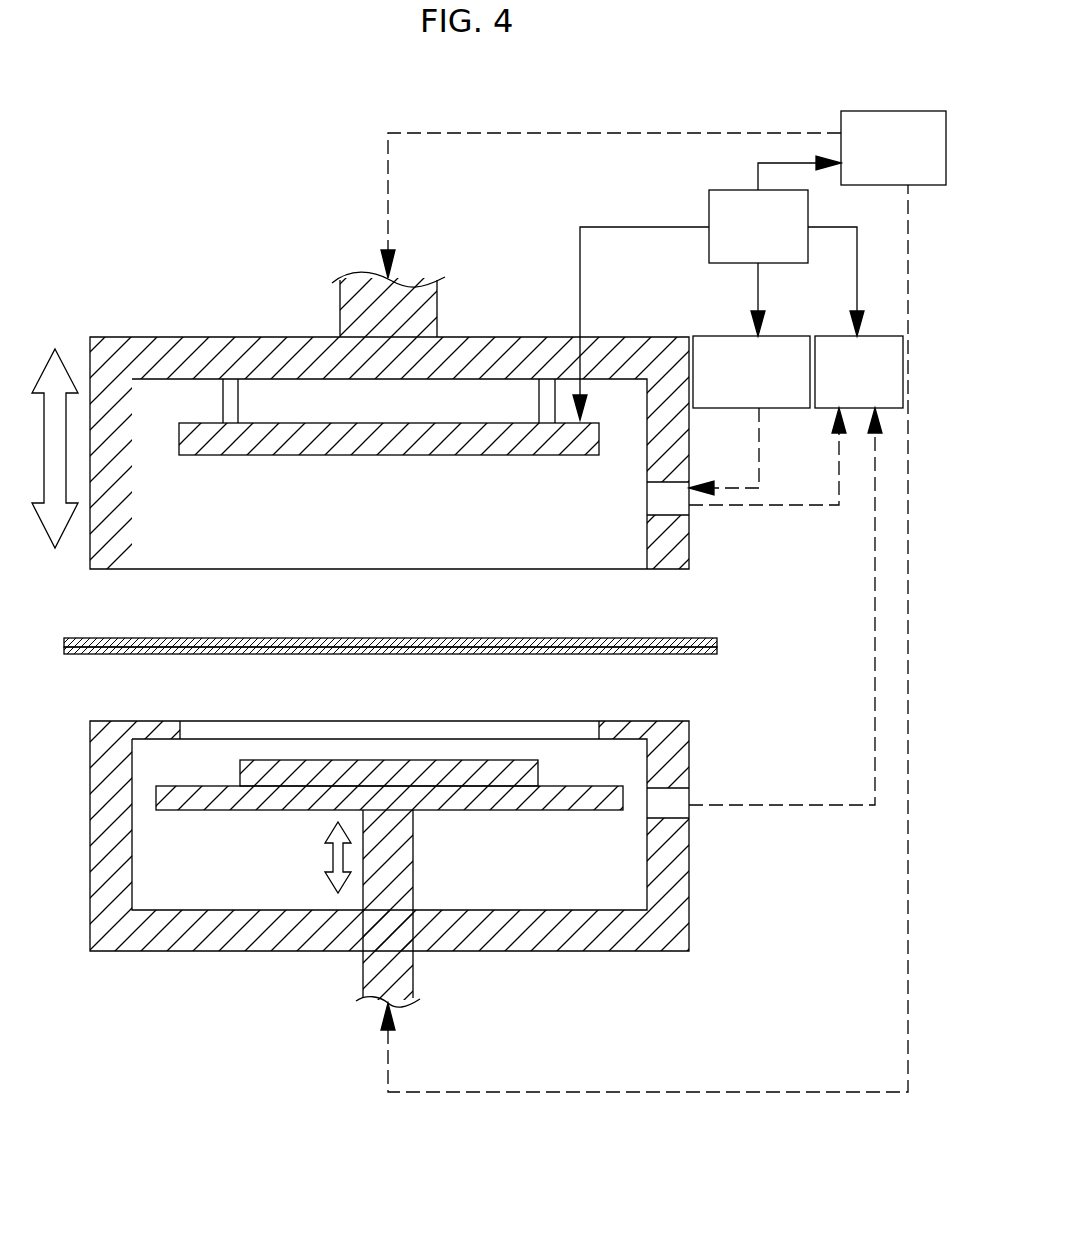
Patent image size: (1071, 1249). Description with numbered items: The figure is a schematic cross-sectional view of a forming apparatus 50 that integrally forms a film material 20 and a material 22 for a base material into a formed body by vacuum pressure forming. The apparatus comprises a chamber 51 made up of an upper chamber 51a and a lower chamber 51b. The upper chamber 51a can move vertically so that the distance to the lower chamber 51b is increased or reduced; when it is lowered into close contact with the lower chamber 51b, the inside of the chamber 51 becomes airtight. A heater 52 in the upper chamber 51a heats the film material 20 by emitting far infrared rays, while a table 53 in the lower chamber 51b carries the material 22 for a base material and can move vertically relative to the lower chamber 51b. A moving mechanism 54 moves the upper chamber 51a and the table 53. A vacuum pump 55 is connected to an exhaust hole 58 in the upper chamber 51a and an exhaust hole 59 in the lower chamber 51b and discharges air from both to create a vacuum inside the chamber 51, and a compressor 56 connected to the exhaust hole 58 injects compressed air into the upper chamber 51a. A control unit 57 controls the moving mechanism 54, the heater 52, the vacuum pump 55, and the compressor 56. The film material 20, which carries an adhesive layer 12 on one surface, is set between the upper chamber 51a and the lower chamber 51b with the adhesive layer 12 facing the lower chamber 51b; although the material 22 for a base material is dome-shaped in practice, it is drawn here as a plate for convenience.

The forming apparatus 50 is at (182, 236).
The chamber 51 is at (443, 644).
The upper chamber 51a is at (443, 453).
The lower chamber 51b is at (443, 836).
The heater 52 is at (391, 456).
The table 53 is at (498, 811).
The moving mechanism 54 is at (910, 110).
The vacuum pump 55 is at (893, 335).
The compressor 56 is at (712, 335).
The control unit 57 is at (709, 200).
The exhaust hole 58 is at (648, 509).
The exhaust hole 59 is at (648, 815).
The film material 20 is at (213, 637).
The adhesive layer 12 is at (213, 655).
The material for a base material 22 is at (392, 759).